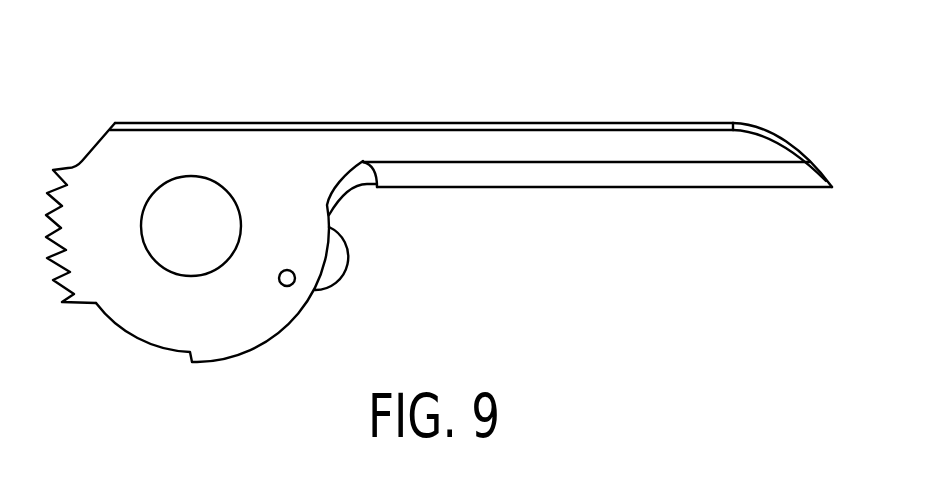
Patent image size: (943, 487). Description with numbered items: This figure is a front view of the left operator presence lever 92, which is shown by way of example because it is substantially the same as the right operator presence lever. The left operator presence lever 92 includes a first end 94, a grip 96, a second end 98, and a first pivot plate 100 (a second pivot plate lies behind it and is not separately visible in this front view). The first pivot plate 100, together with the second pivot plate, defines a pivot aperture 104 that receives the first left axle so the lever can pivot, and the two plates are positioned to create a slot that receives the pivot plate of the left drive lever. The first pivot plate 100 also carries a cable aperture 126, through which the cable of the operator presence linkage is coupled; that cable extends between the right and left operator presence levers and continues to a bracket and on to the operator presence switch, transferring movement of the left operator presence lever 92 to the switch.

The left operator presence lever 92 is at (503, 67).
The first end 94 is at (752, 162).
The grip 96 is at (570, 175).
The second end 98 is at (125, 150).
The first pivot plate 100 is at (133, 310).
The pivot aperture 104 is at (212, 235).
The cable aperture 126 is at (278, 286).